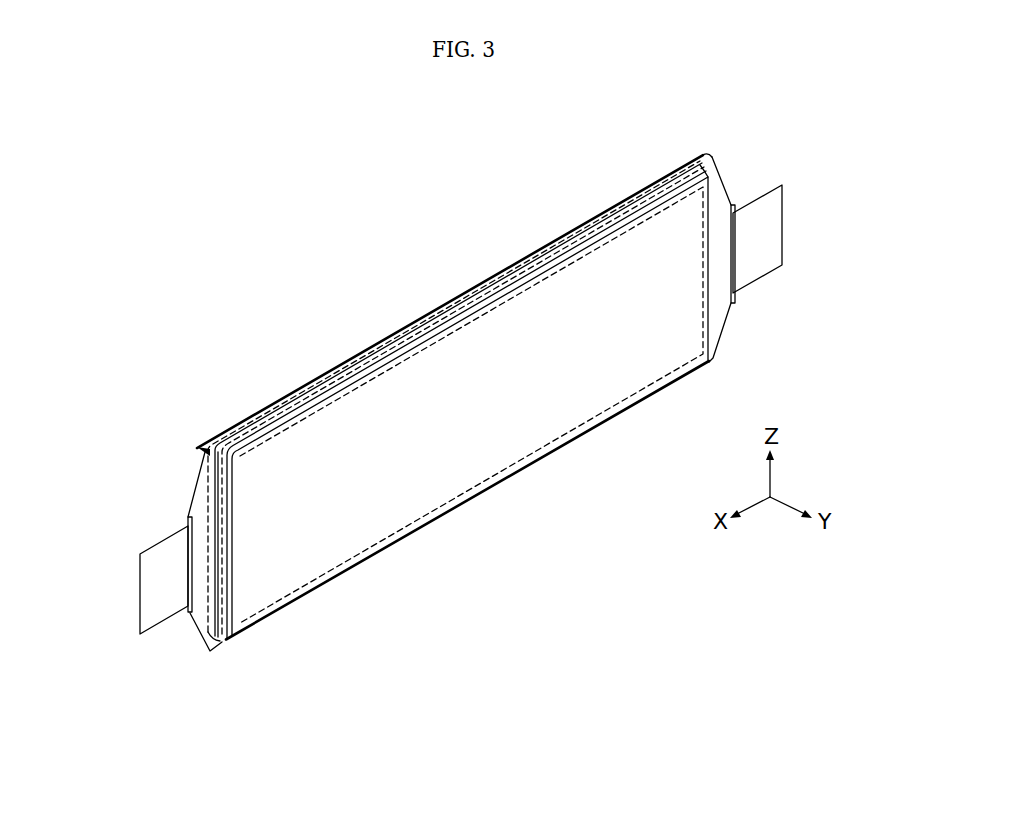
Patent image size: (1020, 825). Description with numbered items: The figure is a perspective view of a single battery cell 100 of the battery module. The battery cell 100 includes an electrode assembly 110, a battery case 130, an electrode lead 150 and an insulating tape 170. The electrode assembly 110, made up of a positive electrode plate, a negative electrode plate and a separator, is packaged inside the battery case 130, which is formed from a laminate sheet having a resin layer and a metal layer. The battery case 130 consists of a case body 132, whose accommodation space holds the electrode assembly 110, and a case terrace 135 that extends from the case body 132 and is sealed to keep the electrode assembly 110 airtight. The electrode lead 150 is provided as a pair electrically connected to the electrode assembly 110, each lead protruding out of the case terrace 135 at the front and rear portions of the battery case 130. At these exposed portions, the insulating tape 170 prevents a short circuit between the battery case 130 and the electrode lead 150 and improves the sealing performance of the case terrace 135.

The battery cell 100 is at (396, 266).
The electrode assembly 110 is at (398, 540).
The battery case 130 is at (304, 685).
The case body 132 is at (272, 587).
The case terrace 135 is at (208, 637).
The electrode lead 150 is at (140, 571).
The insulating tape 170 is at (190, 518).